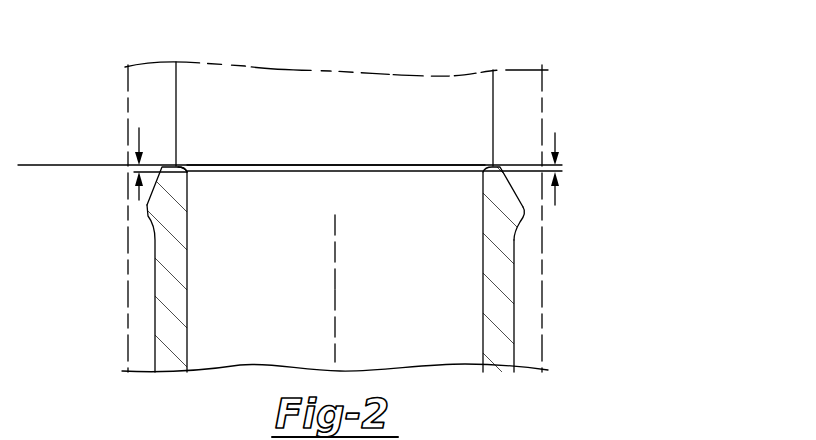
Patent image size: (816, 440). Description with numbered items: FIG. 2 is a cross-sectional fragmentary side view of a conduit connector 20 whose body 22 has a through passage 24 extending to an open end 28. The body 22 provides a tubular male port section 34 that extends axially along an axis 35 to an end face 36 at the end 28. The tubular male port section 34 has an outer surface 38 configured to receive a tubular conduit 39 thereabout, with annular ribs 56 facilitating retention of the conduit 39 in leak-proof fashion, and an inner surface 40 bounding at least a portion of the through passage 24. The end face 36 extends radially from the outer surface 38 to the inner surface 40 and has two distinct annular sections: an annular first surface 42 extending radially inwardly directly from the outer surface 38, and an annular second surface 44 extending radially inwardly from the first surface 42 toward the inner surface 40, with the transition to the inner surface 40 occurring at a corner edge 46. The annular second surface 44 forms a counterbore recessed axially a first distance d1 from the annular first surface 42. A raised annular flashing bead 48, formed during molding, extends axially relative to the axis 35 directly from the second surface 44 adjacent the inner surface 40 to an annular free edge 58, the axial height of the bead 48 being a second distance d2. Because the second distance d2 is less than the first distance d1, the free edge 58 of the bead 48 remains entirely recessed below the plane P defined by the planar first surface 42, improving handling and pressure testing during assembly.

The connector 20 is at (532, 235).
The body 22 is at (500, 277).
The through passage 24 is at (336, 200).
The open end 28 is at (500, 166).
The tubular male port section 34 is at (110, 296).
The axis 35 is at (334, 288).
The end face 36 is at (484, 147).
The outer surface 38 is at (527, 327).
The tubular conduit 39 is at (542, 314).
The inner surface 40 is at (470, 325).
The annular first surface 42 is at (167, 152).
The annular second surface 44 is at (188, 155).
The corner edge 46 is at (188, 172).
The bead 48 is at (258, 171).
The annular ribs 56 is at (523, 208).
The annular free edge 58 is at (305, 152).
The plane P is at (47, 152).
The first distance d1 is at (139, 198).
The second distance d2 is at (557, 138).